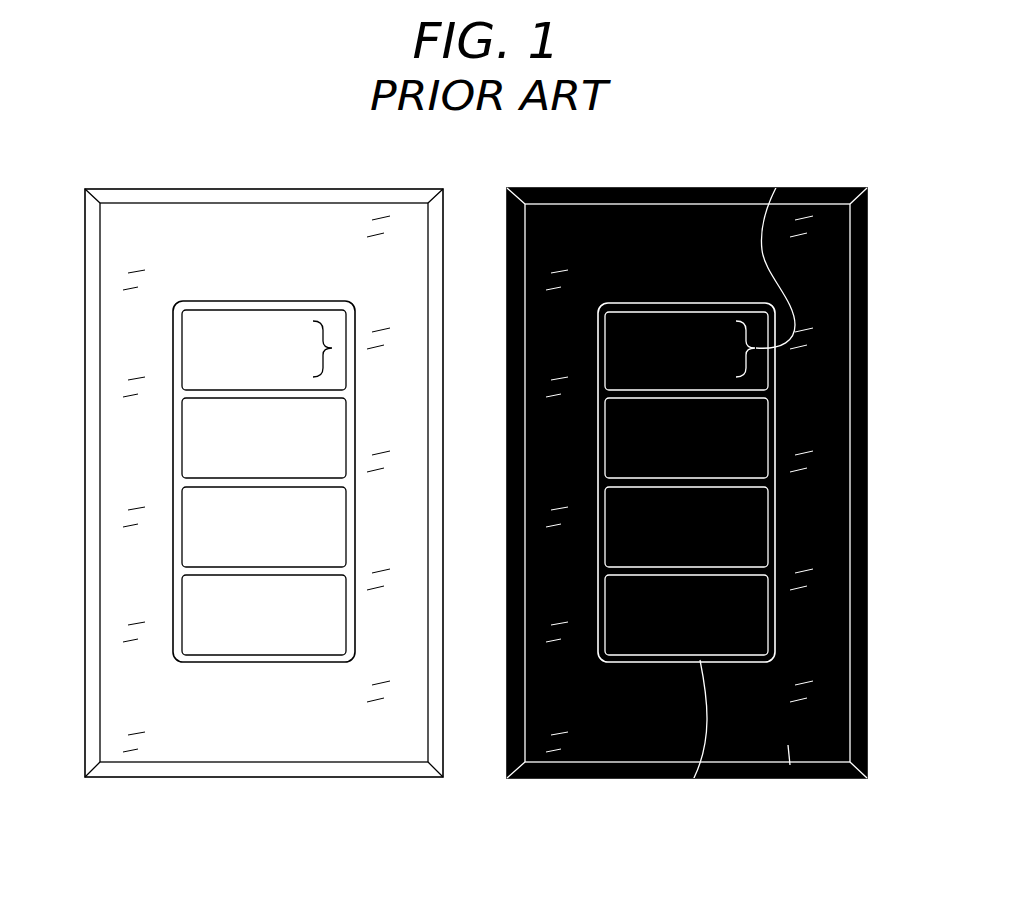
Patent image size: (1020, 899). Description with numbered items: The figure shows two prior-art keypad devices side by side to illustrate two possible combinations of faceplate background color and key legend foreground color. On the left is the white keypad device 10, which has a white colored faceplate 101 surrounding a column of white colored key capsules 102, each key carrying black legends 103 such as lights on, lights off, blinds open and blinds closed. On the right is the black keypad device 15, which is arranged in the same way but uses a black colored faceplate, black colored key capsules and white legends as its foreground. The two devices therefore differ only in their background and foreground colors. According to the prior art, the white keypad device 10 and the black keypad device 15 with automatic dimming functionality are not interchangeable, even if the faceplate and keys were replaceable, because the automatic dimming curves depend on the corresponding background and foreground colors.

The white keypad device 10 is at (287, 188).
The white colored faceplate 101 is at (368, 743).
The white colored key capsules 102 is at (277, 660).
The black legends 103 is at (333, 348).
The black keypad device 15 is at (680, 188).